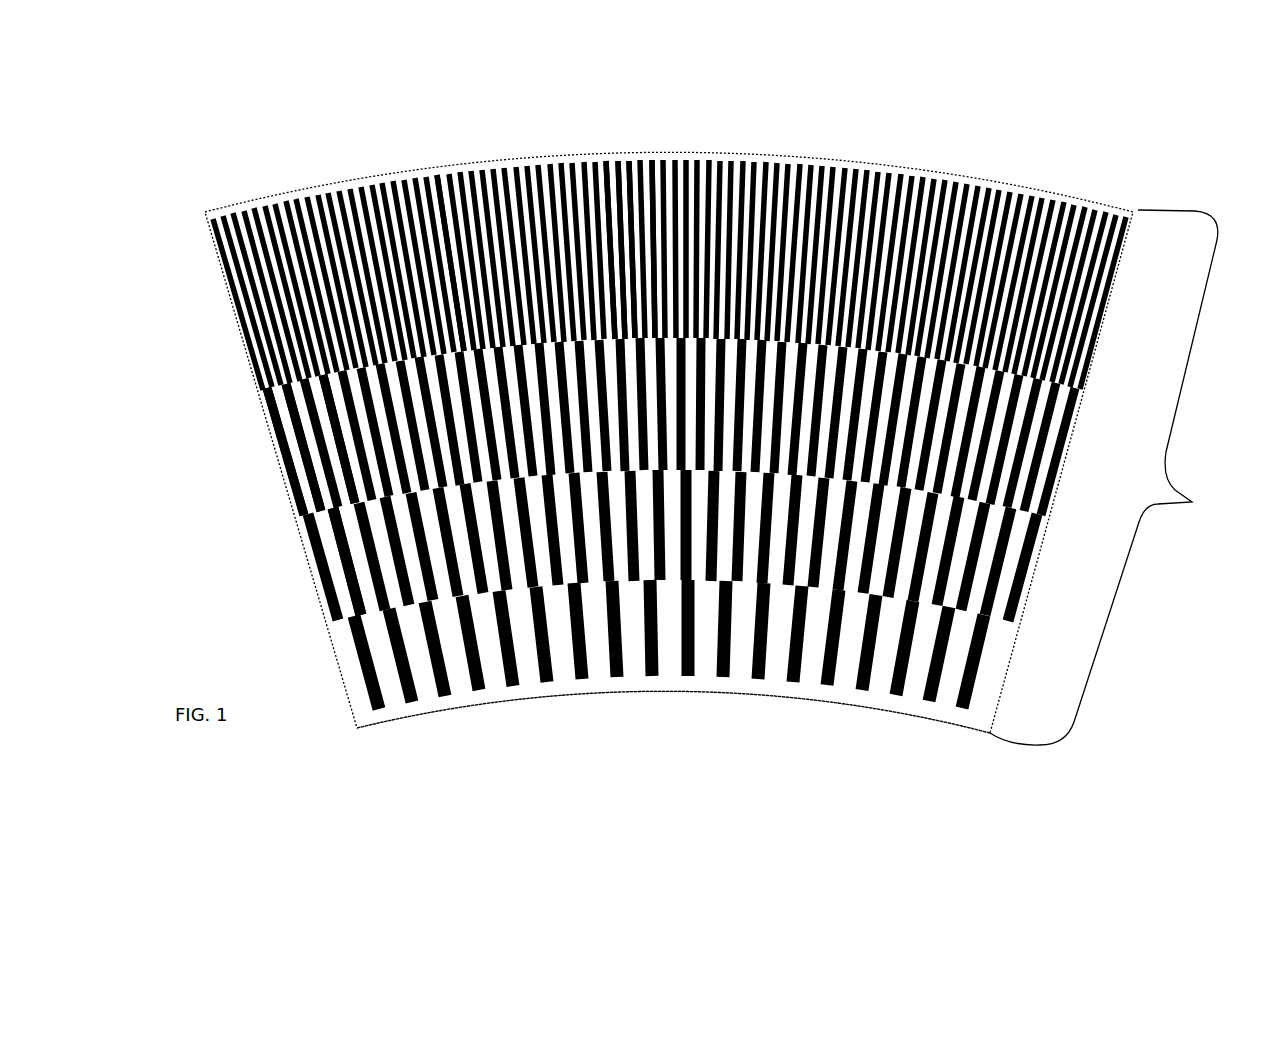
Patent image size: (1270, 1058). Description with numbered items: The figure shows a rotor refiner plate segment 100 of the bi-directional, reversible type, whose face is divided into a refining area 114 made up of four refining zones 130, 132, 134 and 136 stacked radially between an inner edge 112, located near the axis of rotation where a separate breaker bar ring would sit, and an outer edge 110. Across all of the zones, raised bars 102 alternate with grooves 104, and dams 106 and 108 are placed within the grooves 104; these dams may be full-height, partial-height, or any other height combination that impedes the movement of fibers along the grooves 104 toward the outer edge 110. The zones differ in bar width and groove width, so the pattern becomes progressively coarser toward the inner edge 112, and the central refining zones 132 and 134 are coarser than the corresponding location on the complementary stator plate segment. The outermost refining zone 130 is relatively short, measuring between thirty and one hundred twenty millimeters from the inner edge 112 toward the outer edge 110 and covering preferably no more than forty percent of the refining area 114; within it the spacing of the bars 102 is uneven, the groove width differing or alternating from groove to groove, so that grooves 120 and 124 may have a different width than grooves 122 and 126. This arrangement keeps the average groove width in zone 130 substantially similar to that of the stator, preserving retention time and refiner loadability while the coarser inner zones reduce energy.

The rotor refiner plate segment 100 is at (290, 174).
The bars 102 is at (333, 408).
The grooves 104 is at (345, 458).
The dam 106 is at (290, 470).
The dam 108 is at (267, 417).
The outer edge 110 is at (437, 197).
The inner edge 112 is at (638, 694).
The refining area 114 is at (1115, 477).
The groove 120 is at (648, 157).
The groove 122 is at (628, 157).
The groove 124 is at (618, 157).
The groove 126 is at (608, 157).
The outermost refining zone 130 is at (1131, 208).
The refining zone 132 is at (1083, 400).
The refining zone 134 is at (1047, 527).
The refining zone 136 is at (1012, 632).